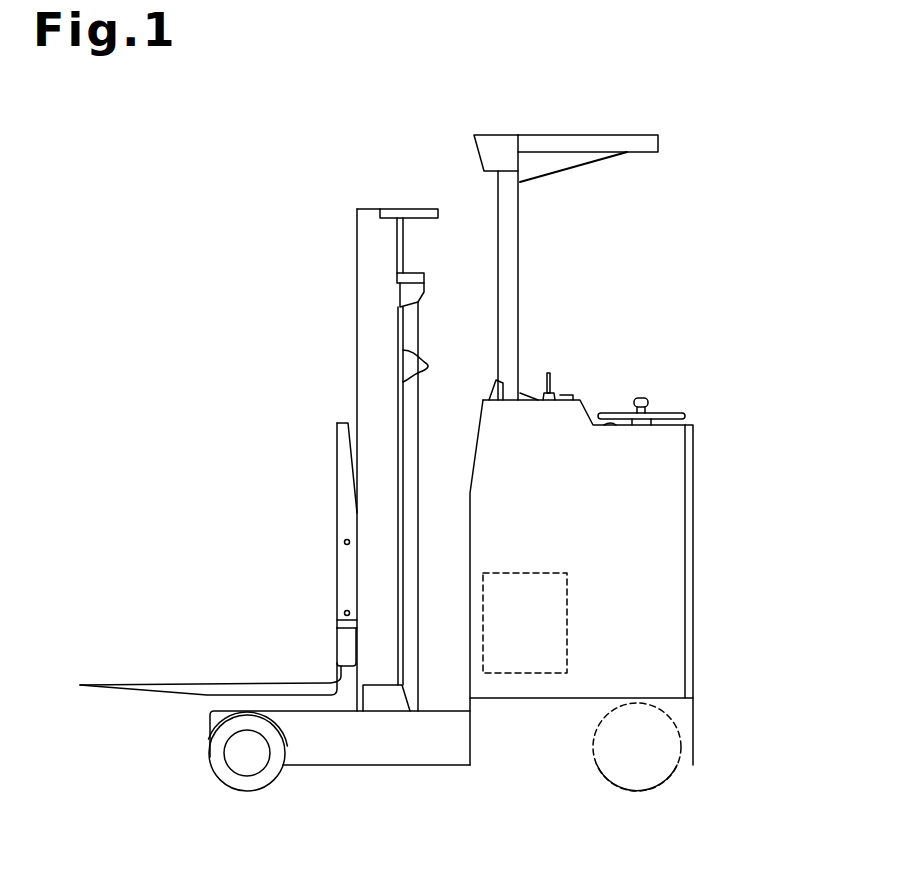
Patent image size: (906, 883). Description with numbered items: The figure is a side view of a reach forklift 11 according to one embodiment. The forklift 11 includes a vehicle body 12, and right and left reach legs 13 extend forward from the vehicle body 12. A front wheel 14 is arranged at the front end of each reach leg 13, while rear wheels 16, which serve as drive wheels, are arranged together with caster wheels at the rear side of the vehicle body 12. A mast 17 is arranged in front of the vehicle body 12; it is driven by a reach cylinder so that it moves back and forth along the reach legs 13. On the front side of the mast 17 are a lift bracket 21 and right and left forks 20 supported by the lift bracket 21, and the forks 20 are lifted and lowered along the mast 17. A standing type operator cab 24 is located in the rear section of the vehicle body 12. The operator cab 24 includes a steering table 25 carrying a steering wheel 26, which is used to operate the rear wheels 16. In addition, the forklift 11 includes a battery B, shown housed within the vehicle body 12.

The forklift 11 is at (732, 303).
The vehicle body 12 is at (670, 457).
The reach legs 13 is at (445, 767).
The front wheel 14 is at (210, 773).
The rear wheels 16 is at (635, 793).
The mast 17 is at (357, 327).
The forks 20 is at (143, 680).
The lift bracket 21 is at (337, 495).
The operator cab 24 is at (690, 407).
The steering table 25 is at (603, 427).
The steering wheel 26 is at (660, 412).
The battery B is at (569, 625).